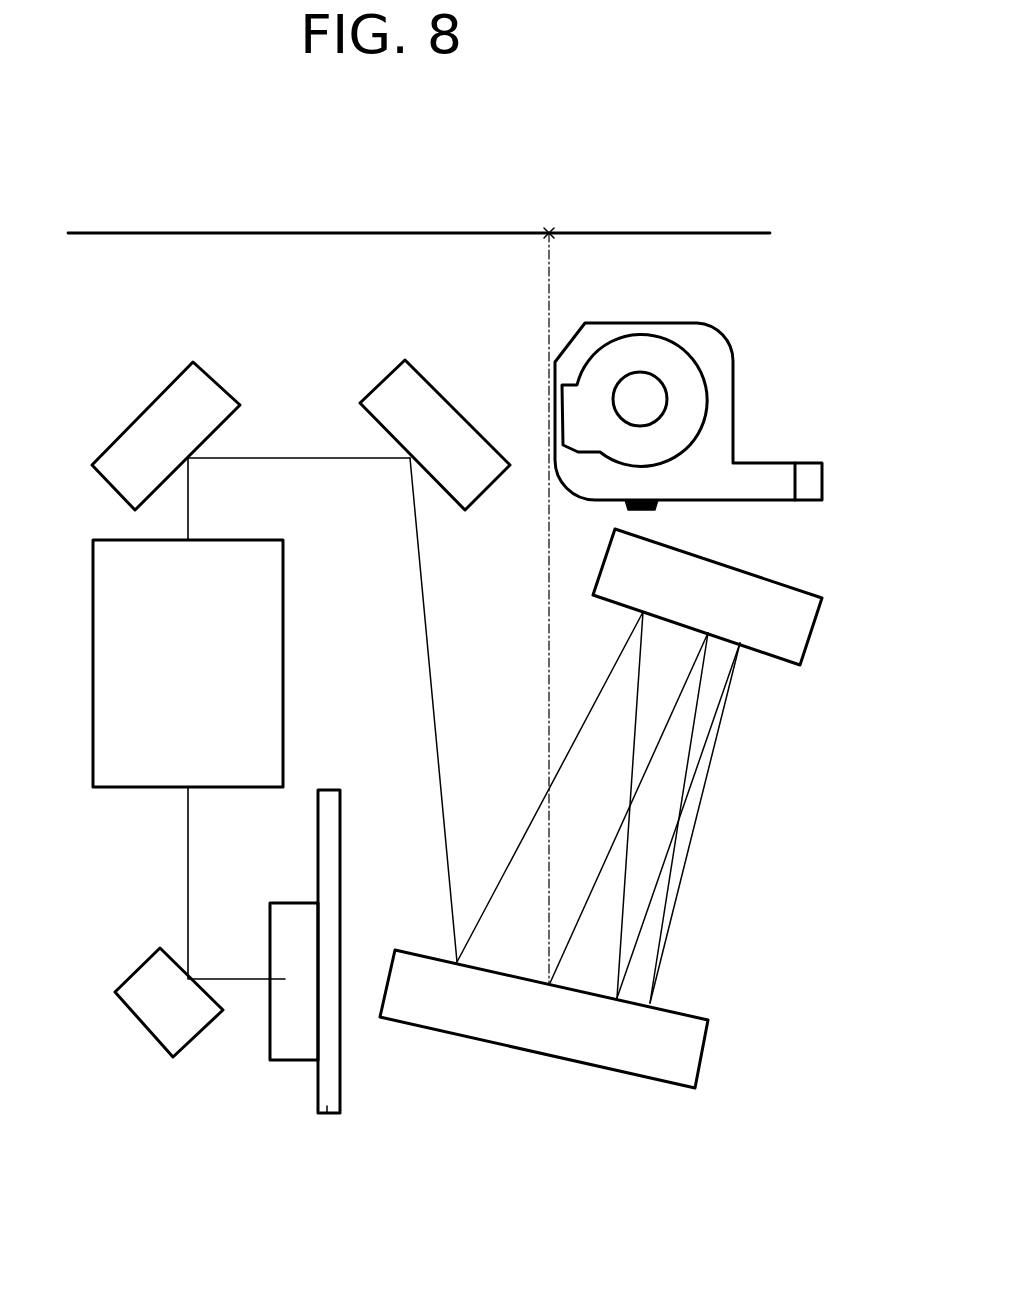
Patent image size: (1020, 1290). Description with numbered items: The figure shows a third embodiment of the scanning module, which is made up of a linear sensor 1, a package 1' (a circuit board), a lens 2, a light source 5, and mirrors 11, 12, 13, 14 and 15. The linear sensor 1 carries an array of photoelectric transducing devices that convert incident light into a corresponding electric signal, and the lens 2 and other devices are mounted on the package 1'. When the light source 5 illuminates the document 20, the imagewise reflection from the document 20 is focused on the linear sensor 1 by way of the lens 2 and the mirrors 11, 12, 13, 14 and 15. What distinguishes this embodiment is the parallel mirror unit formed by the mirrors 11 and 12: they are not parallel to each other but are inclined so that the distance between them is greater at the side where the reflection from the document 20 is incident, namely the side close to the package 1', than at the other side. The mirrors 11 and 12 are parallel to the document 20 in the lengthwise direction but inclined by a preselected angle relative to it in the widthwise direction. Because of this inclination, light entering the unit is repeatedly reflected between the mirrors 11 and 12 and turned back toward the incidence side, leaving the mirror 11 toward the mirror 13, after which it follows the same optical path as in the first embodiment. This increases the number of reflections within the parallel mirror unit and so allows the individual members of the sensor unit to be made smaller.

The document 20 is at (318, 232).
The mirror 14 is at (197, 398).
The mirror 13 is at (415, 398).
The light source 5 is at (708, 352).
The mirror 12 is at (792, 618).
The lens 2 is at (113, 685).
The mirror 15 is at (143, 1003).
The linear sensor 1 is at (271, 1008).
The package 1' is at (321, 1004).
The mirror 11 is at (557, 1045).